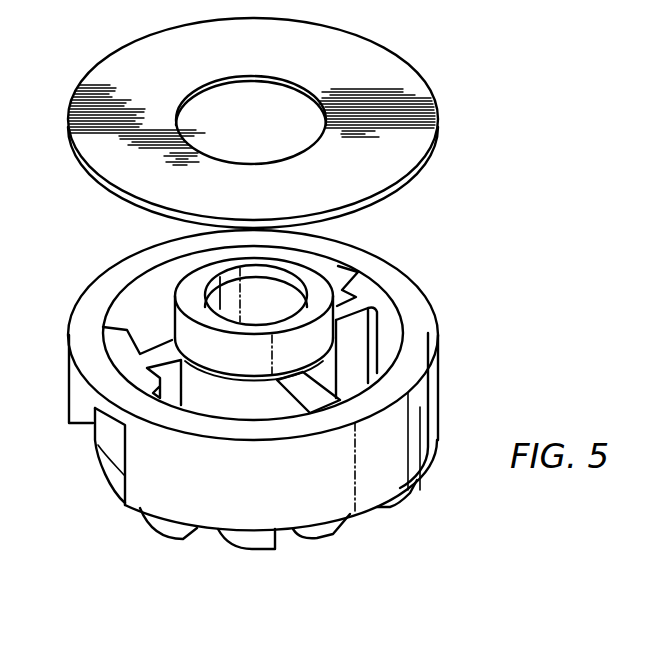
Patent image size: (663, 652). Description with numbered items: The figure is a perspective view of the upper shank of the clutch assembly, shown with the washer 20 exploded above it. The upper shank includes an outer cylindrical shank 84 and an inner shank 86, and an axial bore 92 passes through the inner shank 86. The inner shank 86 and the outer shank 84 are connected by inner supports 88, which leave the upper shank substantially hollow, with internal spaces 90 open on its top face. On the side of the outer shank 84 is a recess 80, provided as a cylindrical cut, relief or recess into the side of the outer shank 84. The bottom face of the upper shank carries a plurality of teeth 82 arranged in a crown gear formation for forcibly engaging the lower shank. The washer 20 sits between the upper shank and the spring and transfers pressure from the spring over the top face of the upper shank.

The washer 20 is at (363, 57).
The recess 80 is at (110, 440).
The teeth 82 is at (261, 546).
The outer cylindrical shank 84 is at (417, 412).
The inner shank 86 is at (318, 333).
The inner supports 88 is at (265, 398).
The internal spaces 90 is at (137, 300).
The axial bore 92 is at (215, 287).